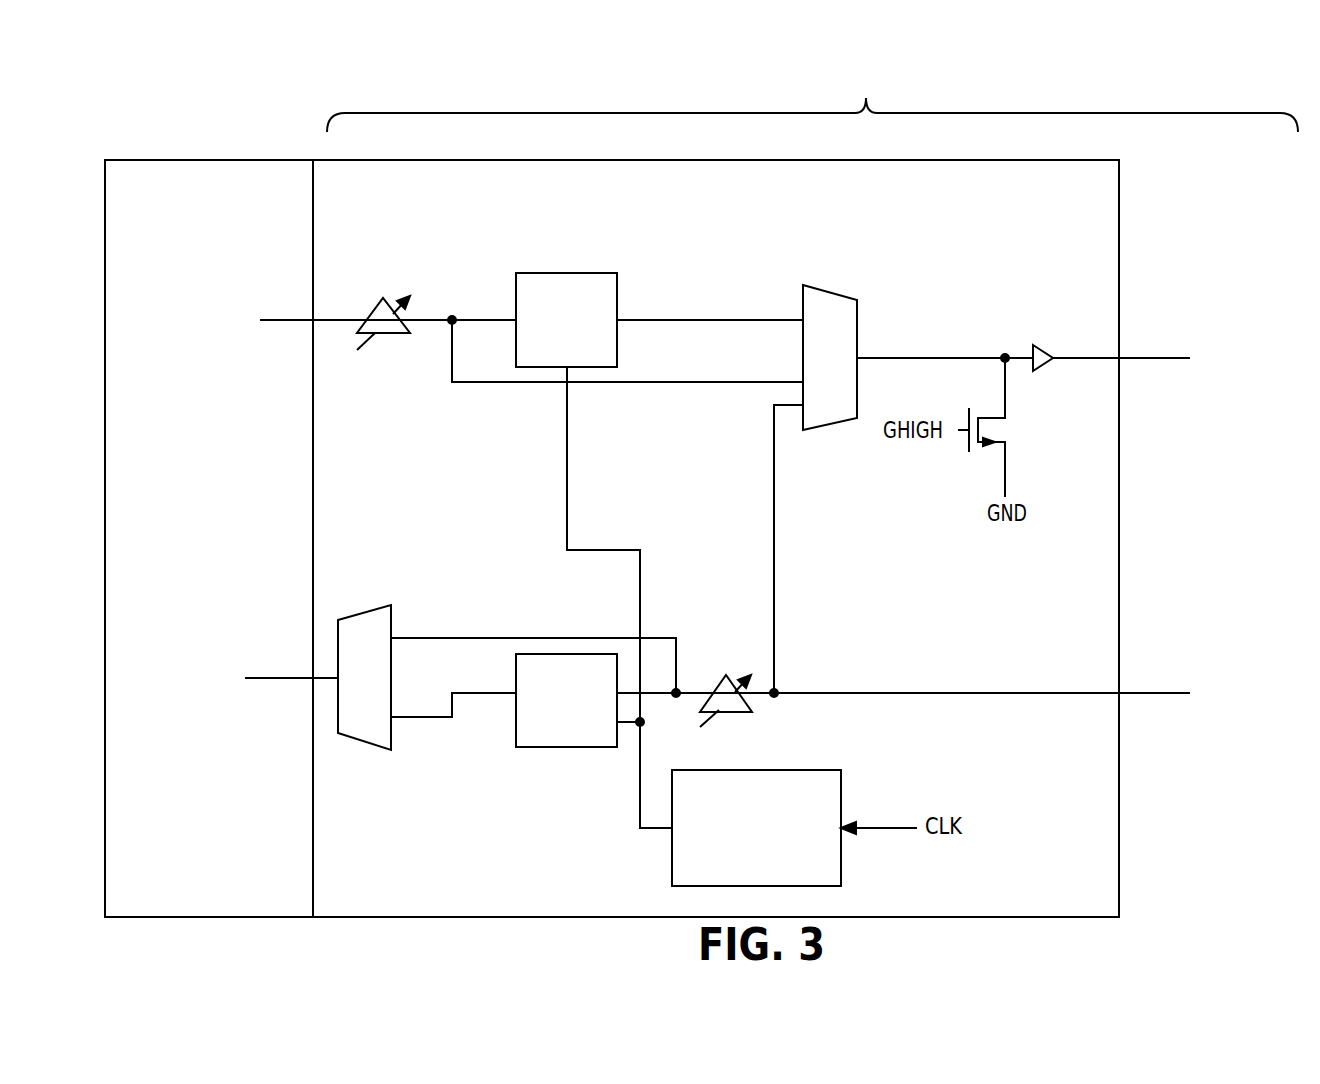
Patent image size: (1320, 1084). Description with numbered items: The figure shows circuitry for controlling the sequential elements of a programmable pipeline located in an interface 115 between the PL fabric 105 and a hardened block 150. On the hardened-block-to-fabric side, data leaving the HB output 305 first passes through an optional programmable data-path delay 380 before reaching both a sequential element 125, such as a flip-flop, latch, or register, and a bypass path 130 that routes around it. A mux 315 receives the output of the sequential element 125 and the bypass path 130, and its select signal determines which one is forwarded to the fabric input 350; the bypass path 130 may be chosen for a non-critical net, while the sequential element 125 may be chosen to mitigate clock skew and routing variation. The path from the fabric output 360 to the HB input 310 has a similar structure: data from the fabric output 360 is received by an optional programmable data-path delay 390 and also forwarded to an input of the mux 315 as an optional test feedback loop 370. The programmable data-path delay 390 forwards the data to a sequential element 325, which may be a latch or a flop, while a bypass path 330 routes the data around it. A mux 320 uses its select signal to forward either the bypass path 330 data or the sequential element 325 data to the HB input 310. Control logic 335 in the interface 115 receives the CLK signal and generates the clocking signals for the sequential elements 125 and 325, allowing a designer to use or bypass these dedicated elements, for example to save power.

The PL fabric 105 is at (812, 86).
The hardened block 150 is at (227, 535).
The interface 115 is at (1055, 238).
The hardened block (HB) output 305 is at (257, 318).
The HB input 310 is at (249, 660).
The programmable data-path delay 380 is at (393, 340).
The sequential element 125 is at (570, 273).
The bypass path 130 is at (467, 382).
The mux 315 is at (833, 285).
The fabric input 350 is at (1071, 355).
The test feedback loop 370 is at (776, 548).
The fabric output 360 is at (1032, 693).
The programmable data-path delay 390 is at (735, 712).
The mux 320 is at (367, 605).
The bypass path 330 is at (512, 636).
The sequential element 325 is at (592, 747).
The control logic 335 is at (780, 868).